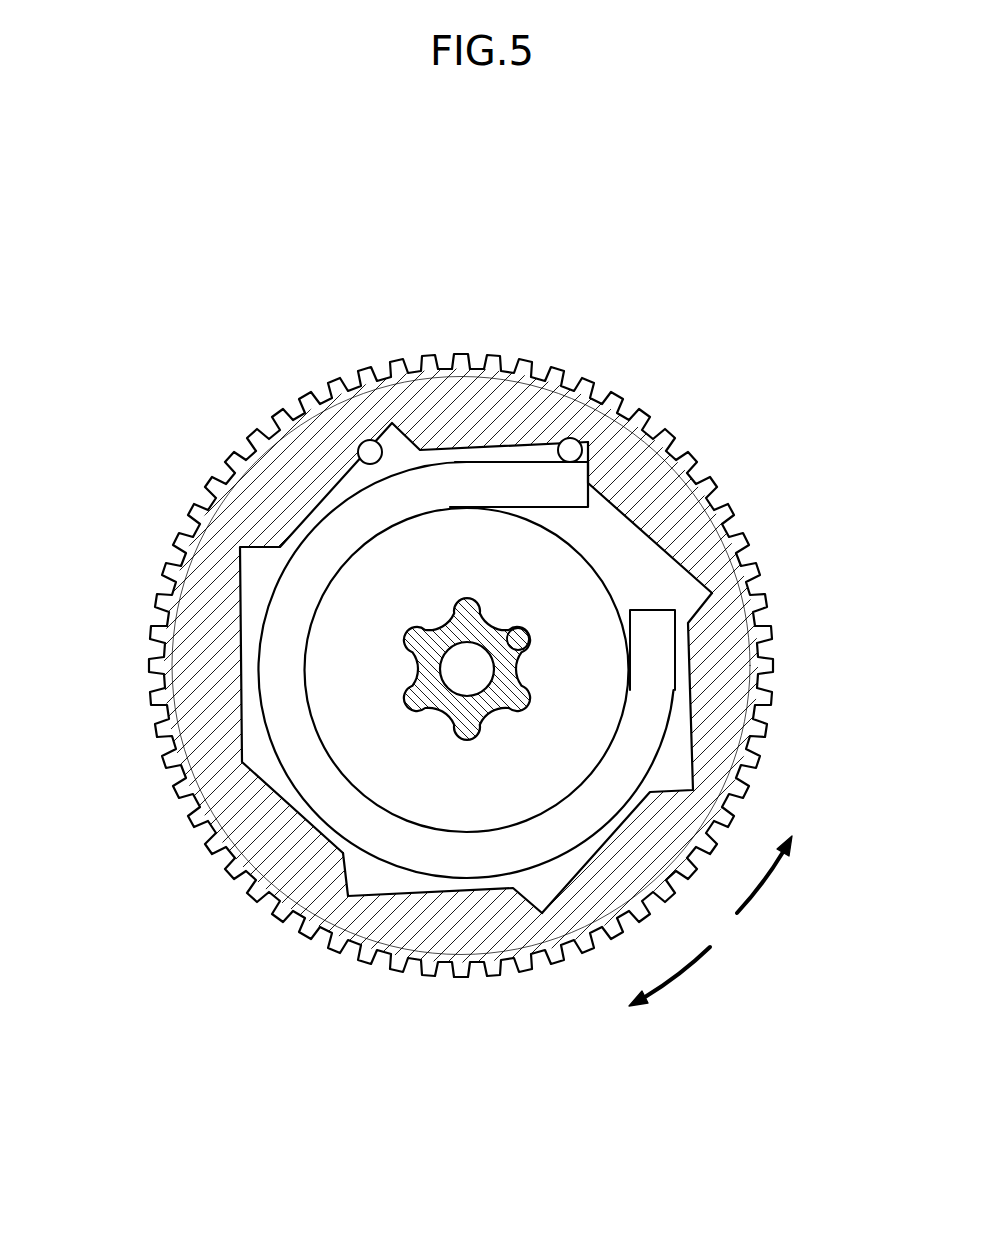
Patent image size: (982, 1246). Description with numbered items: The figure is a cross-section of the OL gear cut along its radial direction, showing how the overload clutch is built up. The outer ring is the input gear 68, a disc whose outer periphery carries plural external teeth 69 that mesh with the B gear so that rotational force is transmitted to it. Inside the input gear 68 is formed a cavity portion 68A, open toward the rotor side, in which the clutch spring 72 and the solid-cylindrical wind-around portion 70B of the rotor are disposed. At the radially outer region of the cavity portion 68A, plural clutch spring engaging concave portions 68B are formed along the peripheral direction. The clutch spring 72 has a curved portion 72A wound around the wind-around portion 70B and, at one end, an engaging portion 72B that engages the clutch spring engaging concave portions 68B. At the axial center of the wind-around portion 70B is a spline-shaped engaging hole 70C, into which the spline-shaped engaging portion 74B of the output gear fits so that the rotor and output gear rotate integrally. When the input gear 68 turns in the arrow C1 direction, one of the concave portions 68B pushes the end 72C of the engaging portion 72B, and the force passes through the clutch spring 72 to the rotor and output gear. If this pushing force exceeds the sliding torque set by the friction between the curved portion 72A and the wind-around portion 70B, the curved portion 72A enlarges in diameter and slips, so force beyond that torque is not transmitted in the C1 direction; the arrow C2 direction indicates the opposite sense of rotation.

The input gear 68 is at (527, 357).
The external teeth 69 is at (172, 560).
The cavity portion 68A is at (668, 530).
The clutch spring engaging concave portions 68B is at (362, 445).
The wind-around portion 70B is at (630, 685).
The engaging hole 70C is at (520, 640).
The clutch spring 72 is at (540, 869).
The curved portion 72A is at (381, 866).
The engaging portion 72B is at (530, 470).
The end 72C is at (660, 533).
The engaging portion 74B is at (412, 665).
The arrow C1 direction C1 is at (765, 900).
The arrow C2 direction C2 is at (676, 985).